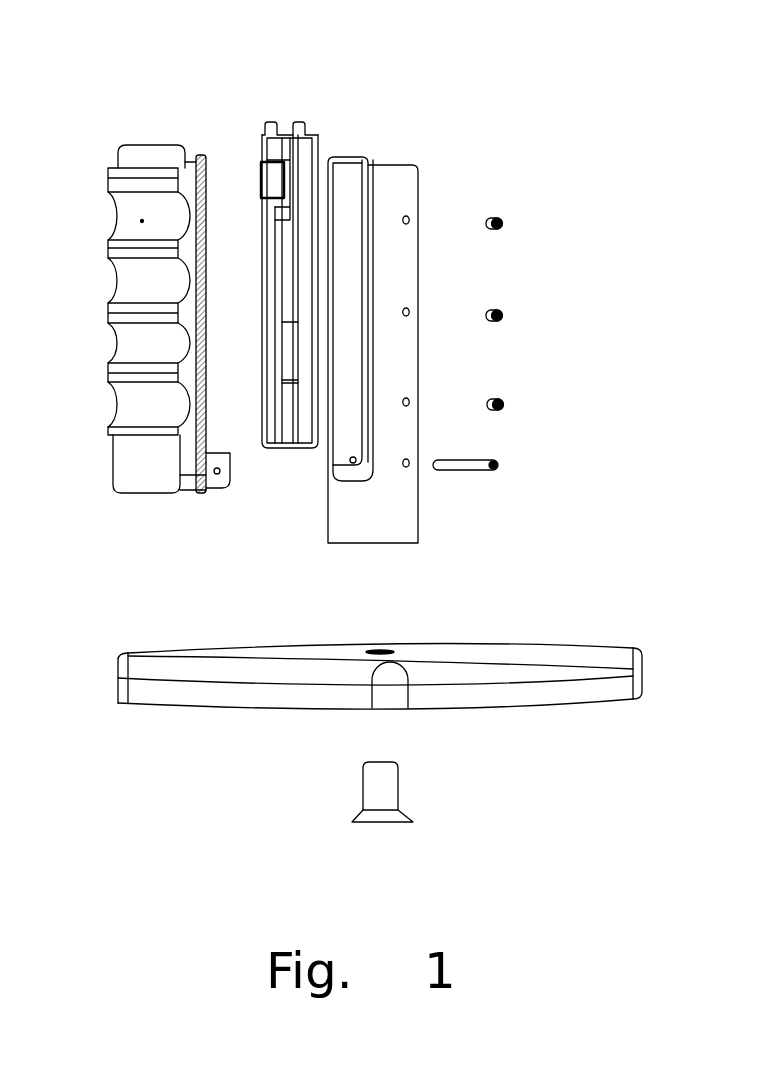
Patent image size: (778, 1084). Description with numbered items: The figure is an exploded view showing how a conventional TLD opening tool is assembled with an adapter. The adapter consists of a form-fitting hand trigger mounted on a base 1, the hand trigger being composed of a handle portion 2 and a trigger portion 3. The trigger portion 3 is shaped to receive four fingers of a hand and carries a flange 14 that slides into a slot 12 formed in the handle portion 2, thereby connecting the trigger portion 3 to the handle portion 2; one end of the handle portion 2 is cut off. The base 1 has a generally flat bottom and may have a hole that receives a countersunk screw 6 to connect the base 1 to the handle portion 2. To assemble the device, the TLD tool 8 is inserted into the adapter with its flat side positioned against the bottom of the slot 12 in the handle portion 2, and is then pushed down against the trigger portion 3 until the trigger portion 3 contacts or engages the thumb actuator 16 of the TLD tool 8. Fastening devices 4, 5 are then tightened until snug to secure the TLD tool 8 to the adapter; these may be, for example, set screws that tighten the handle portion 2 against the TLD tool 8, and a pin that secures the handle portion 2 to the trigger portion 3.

The base 1 is at (523, 695).
The handle portion 2 is at (368, 533).
The trigger portion 3 is at (135, 275).
The fastening device 4 is at (503, 313).
The fastening device 5 is at (483, 467).
The countersunk screw 6 is at (377, 818).
The TLD tool 8 is at (305, 143).
The slot 12 is at (342, 185).
The flange 14 is at (207, 495).
The thumb actuator 16 is at (265, 167).